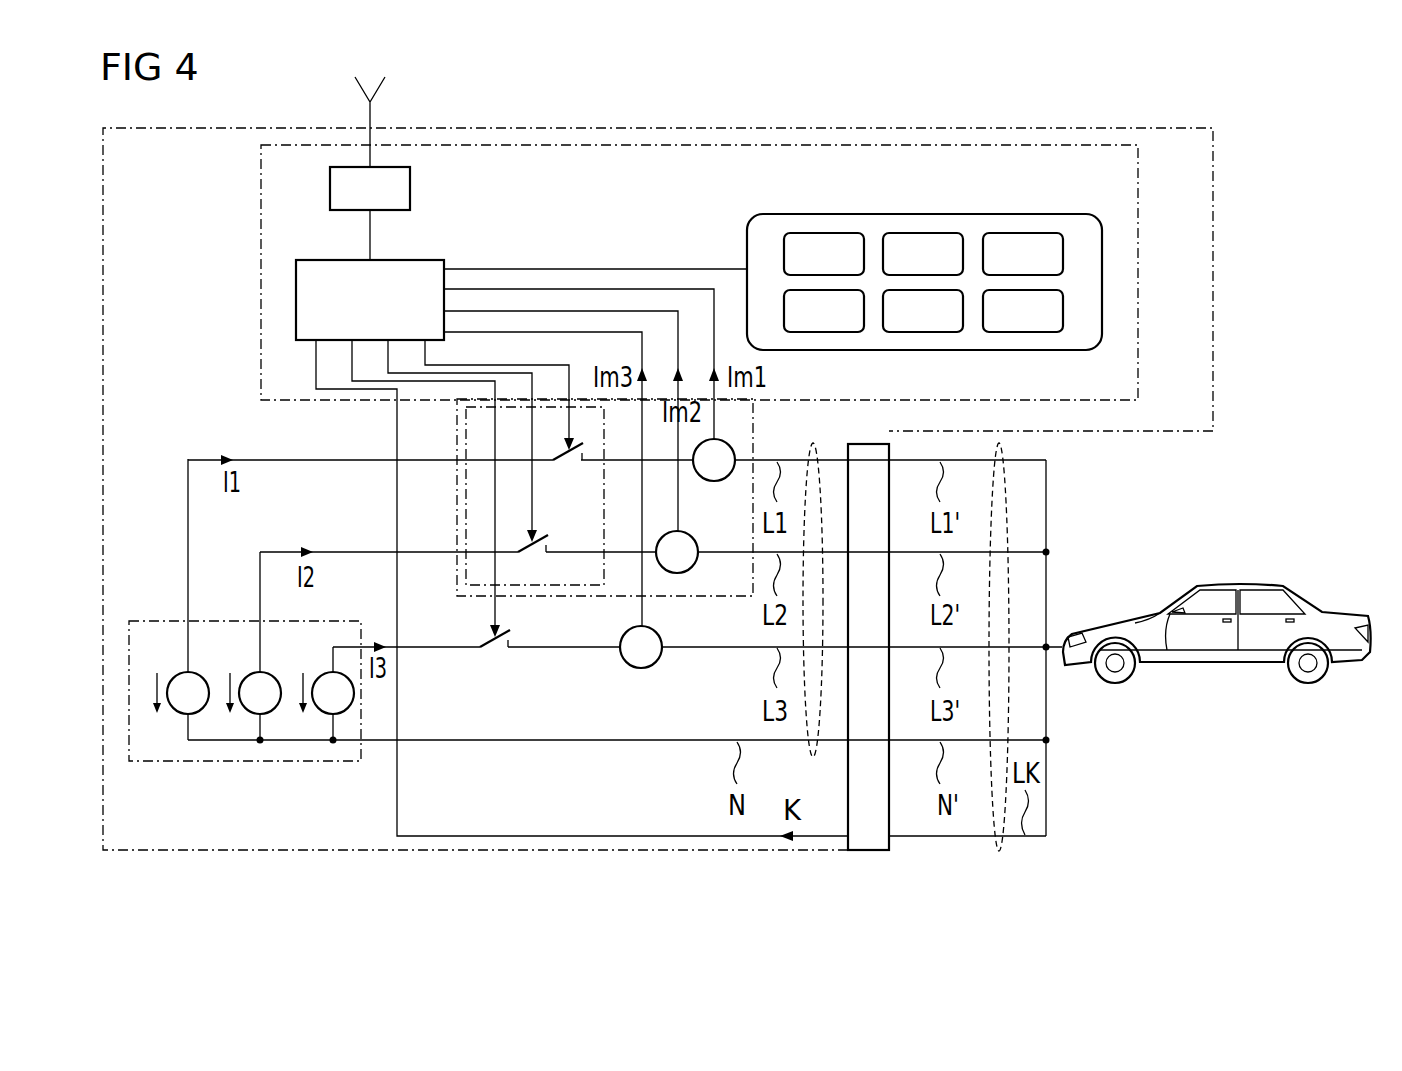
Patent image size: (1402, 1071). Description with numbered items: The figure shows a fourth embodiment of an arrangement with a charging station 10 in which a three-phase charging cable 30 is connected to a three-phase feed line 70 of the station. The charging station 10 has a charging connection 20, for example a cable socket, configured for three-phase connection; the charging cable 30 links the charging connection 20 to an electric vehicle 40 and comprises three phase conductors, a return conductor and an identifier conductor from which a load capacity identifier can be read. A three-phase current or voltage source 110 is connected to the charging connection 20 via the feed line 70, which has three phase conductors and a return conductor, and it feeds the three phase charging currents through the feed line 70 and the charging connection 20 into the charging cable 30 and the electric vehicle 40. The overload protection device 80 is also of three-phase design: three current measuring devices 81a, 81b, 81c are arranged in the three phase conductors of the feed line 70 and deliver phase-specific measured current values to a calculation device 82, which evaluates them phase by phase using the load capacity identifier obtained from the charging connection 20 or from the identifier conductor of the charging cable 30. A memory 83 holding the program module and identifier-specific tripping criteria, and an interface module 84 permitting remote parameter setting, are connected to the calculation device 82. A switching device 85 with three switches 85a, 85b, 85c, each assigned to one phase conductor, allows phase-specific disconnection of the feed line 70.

The charging station 10 is at (1215, 407).
The charging connection 20 is at (872, 442).
The charging cable 30 is at (1010, 582).
The electric vehicle 40 is at (1218, 665).
The feed line 70 is at (816, 442).
The overload protection device 80 is at (261, 236).
The current measuring device 81a is at (717, 482).
The current measuring device 81b is at (680, 575).
The current measuring device 81c is at (643, 670).
The calculation device 82 is at (370, 275).
The memory 83 is at (747, 249).
The interface module 84 is at (370, 143).
The switching device 85 is at (466, 432).
The switch 85a is at (572, 462).
The switch 85b is at (535, 554).
The switch 85c is at (498, 650).
The current or voltage source 110 is at (153, 621).